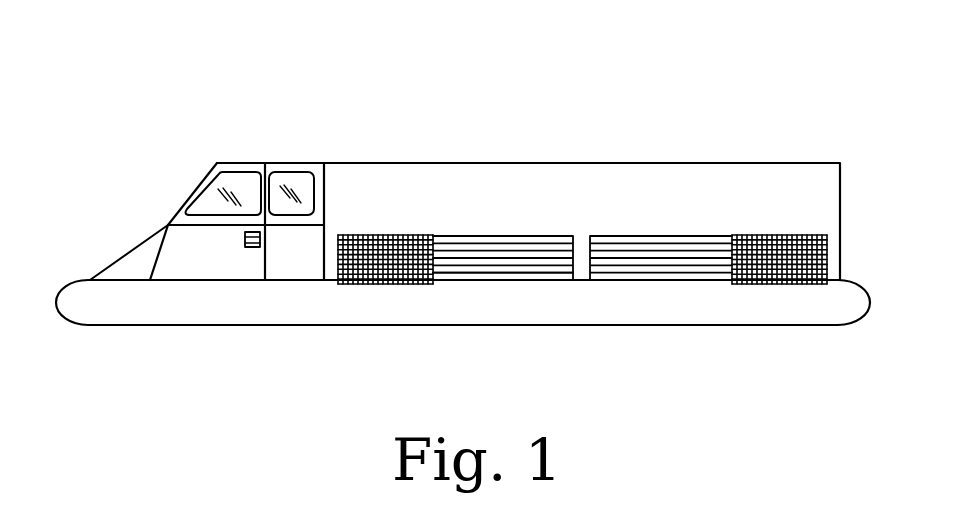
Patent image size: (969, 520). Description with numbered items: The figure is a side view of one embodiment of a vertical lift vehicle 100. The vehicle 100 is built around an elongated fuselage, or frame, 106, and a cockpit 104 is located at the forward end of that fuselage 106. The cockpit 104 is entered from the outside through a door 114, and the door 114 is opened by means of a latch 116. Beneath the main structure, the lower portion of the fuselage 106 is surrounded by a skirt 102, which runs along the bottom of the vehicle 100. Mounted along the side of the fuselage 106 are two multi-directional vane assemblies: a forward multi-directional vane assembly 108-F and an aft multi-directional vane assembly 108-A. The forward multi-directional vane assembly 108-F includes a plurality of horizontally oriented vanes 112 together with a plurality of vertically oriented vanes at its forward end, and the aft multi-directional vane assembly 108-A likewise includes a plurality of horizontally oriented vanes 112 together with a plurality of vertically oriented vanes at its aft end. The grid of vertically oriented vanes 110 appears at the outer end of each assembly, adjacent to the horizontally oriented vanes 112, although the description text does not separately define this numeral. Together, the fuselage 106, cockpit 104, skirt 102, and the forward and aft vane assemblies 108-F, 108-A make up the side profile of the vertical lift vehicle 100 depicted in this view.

The vertical lift vehicle 100 is at (124, 67).
The skirt 102 is at (192, 326).
The cockpit 104 is at (253, 163).
The fuselage 106 is at (618, 163).
The forward multi-directional vane assembly 108-F is at (497, 236).
The aft multi-directional vane assembly 108-A is at (668, 236).
The grille 110 is at (396, 236).
The horizontally oriented vanes 112 is at (500, 279).
The door 114 is at (152, 264).
The latch 116 is at (250, 248).